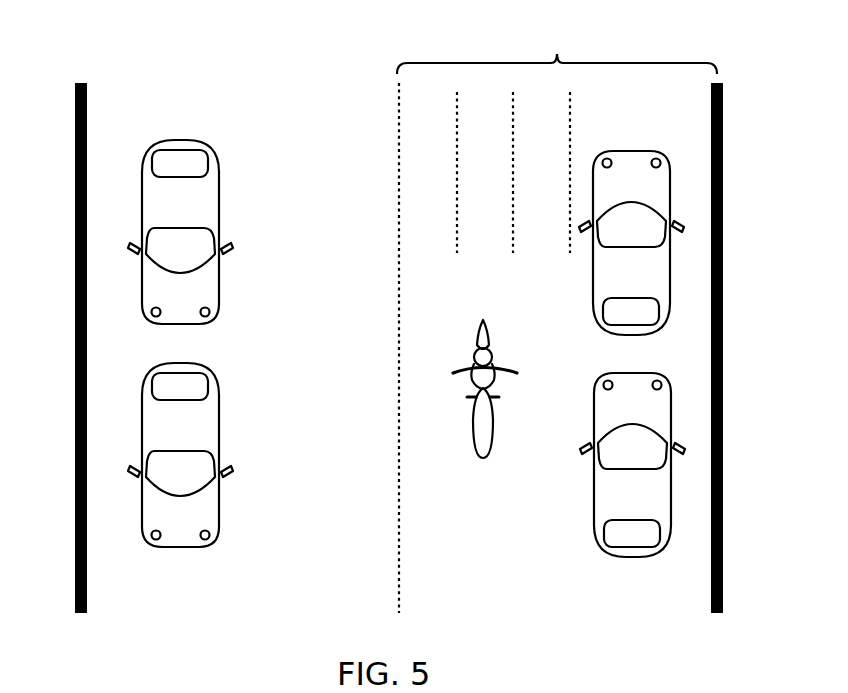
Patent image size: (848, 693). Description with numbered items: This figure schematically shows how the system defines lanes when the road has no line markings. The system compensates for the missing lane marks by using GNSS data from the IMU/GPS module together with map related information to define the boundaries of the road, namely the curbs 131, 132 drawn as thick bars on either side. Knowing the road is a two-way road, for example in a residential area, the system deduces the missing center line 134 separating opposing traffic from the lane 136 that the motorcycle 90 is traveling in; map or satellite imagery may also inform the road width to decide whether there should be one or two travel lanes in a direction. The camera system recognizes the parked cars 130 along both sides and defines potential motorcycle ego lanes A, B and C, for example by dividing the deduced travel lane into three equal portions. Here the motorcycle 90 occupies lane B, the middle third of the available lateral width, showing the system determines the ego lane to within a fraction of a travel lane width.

The motorcycle 90 is at (478, 333).
The parked cars 130 is at (214, 304).
The curb 131 is at (75, 412).
The curb 132 is at (723, 432).
The center line 134 is at (398, 348).
The lane 136 is at (557, 136).